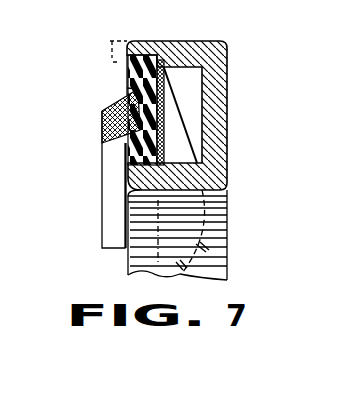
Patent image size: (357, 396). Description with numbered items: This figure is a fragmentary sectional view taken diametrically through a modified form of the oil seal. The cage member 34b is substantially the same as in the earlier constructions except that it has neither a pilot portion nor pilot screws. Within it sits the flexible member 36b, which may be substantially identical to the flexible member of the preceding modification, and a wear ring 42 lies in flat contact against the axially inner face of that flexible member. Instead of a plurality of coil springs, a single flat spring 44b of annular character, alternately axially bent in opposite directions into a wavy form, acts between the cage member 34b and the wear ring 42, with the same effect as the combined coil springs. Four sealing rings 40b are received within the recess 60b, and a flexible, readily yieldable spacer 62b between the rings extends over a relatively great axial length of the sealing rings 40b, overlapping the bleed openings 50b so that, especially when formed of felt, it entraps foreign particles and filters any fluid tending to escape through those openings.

The cage member 34b is at (190, 42).
The flexible member 36b is at (140, 55).
The wear ring 42 is at (160, 60).
The flat spring 44b is at (185, 113).
The sealing rings 40b is at (103, 107).
The bleed openings 50b is at (127, 93).
The recess 60b is at (127, 88).
The spacer 62b is at (108, 127).